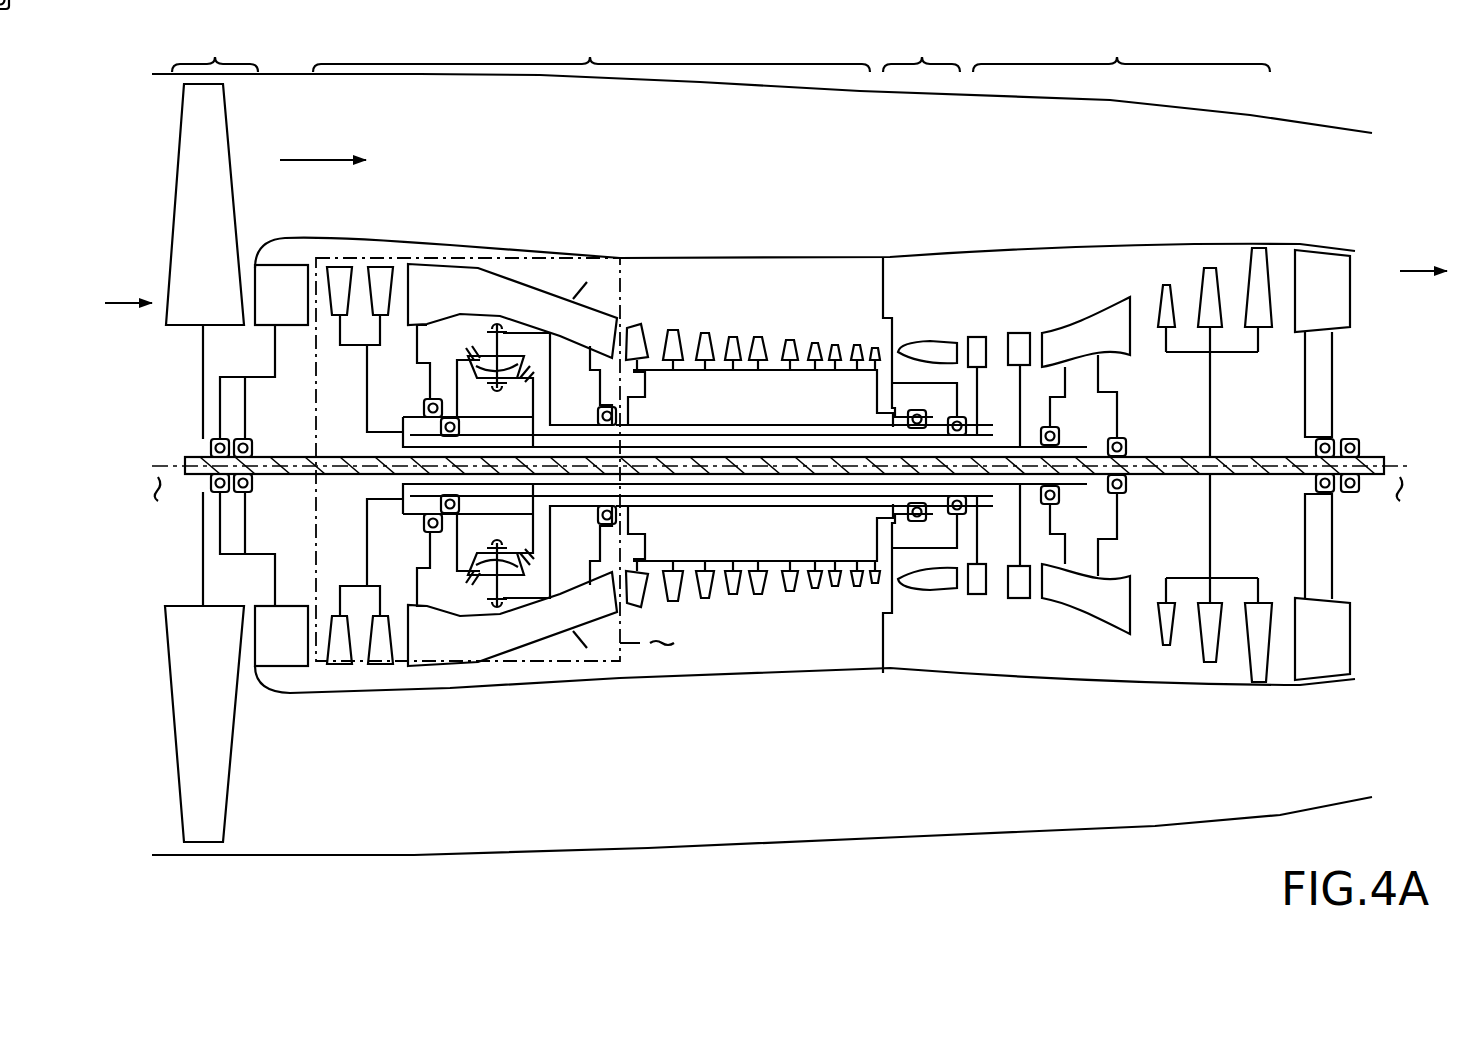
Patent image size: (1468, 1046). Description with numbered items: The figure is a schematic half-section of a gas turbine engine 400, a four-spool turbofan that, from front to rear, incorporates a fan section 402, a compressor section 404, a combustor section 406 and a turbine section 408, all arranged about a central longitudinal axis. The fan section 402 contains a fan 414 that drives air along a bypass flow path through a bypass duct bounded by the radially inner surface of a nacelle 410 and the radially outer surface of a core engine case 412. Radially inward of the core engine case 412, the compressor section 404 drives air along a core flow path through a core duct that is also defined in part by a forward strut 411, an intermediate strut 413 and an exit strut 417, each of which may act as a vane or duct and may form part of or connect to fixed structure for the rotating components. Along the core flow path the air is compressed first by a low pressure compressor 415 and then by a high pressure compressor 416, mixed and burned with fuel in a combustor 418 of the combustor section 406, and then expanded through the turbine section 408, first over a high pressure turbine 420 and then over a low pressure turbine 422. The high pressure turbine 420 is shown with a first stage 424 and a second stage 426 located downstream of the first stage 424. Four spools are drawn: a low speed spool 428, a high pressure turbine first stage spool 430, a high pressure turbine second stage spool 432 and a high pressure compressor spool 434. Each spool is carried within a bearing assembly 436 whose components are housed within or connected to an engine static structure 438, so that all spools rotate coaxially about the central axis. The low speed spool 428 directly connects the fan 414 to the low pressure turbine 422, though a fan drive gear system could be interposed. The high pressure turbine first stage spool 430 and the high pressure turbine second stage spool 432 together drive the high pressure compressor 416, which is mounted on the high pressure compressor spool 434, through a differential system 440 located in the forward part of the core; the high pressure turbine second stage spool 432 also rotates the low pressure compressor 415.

The gas turbine engine 400 is at (763, 452).
The fan section 402 is at (215, 50).
The compressor section 404 is at (591, 50).
The combustor section 406 is at (921, 50).
The turbine section 408 is at (1121, 50).
The nacelle 410 is at (150, 99).
The forward strut 411 is at (497, 266).
The core engine case 412 is at (675, 256).
The intermediate strut 413 is at (1112, 306).
The fan 414 is at (155, 652).
The low pressure compressor 415 is at (349, 252).
The high pressure compressor 416 is at (754, 328).
The exit strut 417 is at (1342, 250).
The combustor 418 is at (906, 326).
The high pressure turbine 420 is at (996, 328).
The low pressure turbine 422 is at (1178, 288).
The first stage 424 is at (977, 605).
The second stage 426 is at (1018, 607).
The low speed spool 428 is at (272, 477).
The high pressure turbine first stage spool 430 is at (750, 433).
The high pressure turbine second stage spool 432 is at (677, 445).
The high pressure compressor spool 434 is at (823, 425).
The bearing assembly 436 is at (210, 443).
The engine static structure 438 is at (275, 354).
The differential system 440 is at (435, 343).